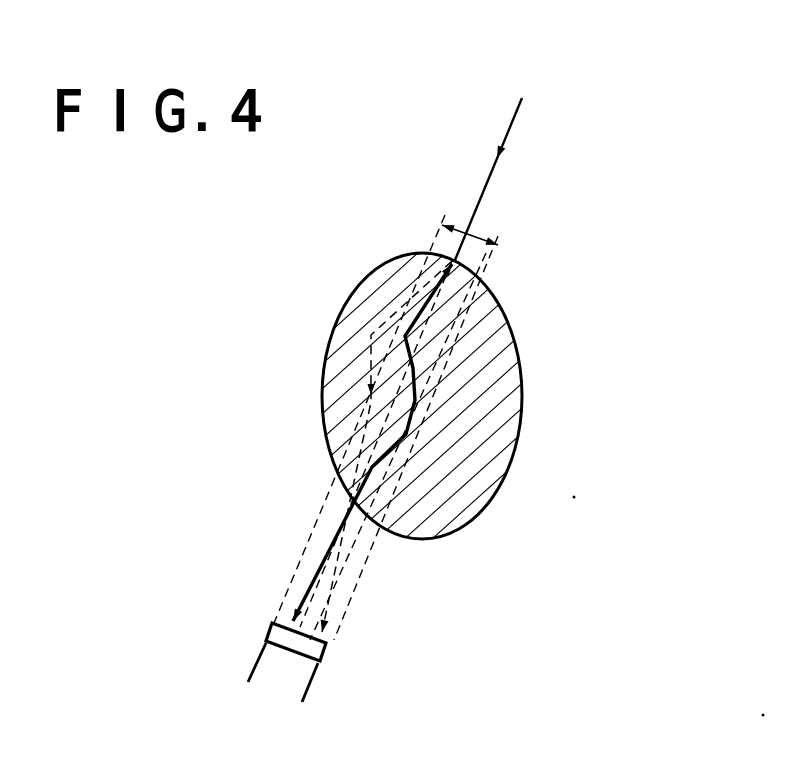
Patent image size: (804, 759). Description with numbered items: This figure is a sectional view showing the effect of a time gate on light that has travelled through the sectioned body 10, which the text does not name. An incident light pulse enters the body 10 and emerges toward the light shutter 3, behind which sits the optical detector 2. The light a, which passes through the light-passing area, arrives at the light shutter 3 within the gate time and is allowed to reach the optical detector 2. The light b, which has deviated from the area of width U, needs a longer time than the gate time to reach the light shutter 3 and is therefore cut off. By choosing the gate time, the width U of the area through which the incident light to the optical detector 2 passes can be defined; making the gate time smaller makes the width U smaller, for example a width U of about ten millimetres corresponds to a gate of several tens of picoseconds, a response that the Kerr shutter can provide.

The scattering medium (object) 10 is at (520, 433).
The optical detector 2 is at (252, 670).
The light shutter 3 is at (270, 632).
The light a is at (411, 366).
The light b is at (388, 316).
The width U is at (472, 236).